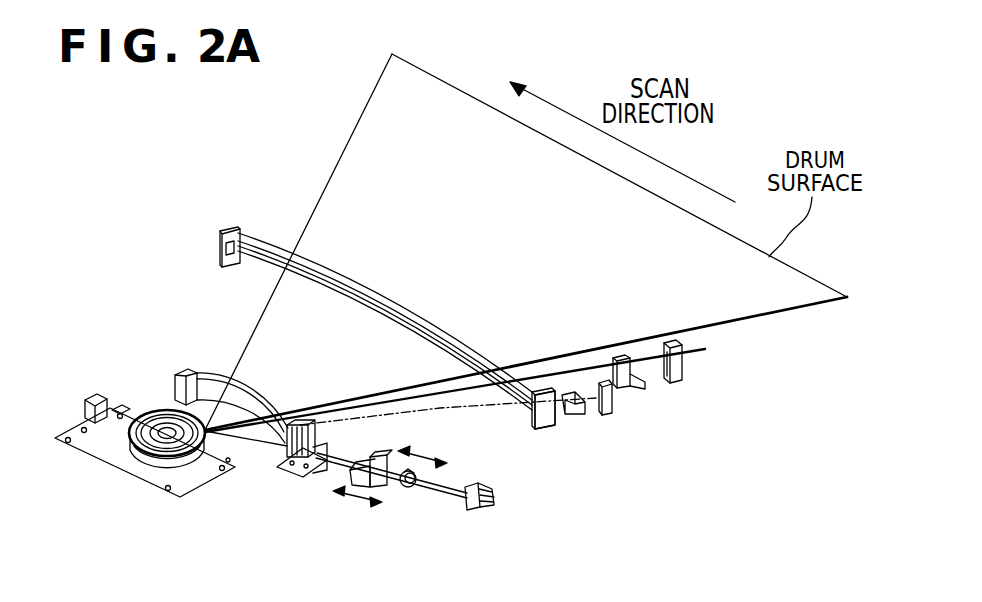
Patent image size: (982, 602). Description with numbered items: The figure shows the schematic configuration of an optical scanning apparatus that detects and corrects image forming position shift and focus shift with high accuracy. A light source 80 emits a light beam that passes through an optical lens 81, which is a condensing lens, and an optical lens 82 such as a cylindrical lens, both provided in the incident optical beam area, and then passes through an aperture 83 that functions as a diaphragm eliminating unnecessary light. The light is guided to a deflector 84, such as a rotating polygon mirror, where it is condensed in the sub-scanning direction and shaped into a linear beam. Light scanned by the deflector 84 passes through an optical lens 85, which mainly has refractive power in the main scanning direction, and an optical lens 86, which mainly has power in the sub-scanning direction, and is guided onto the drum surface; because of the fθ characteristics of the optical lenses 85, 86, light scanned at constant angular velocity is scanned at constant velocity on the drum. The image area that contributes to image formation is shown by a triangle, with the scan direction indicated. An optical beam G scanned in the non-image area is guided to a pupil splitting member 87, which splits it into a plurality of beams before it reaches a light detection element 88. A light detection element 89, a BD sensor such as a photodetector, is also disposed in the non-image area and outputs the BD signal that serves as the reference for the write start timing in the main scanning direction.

The light source 80 is at (485, 511).
The optical lens 81 is at (412, 490).
The optical lens 82 is at (386, 490).
The aperture 83 is at (293, 480).
The deflector 84 is at (160, 468).
The optical lens 85 is at (210, 374).
The optical lens 86 is at (266, 242).
The pupil splitting member 87 is at (640, 390).
The light detection element 88 is at (682, 366).
The light detection element 89 is at (605, 416).
The optical beam G is at (481, 396).